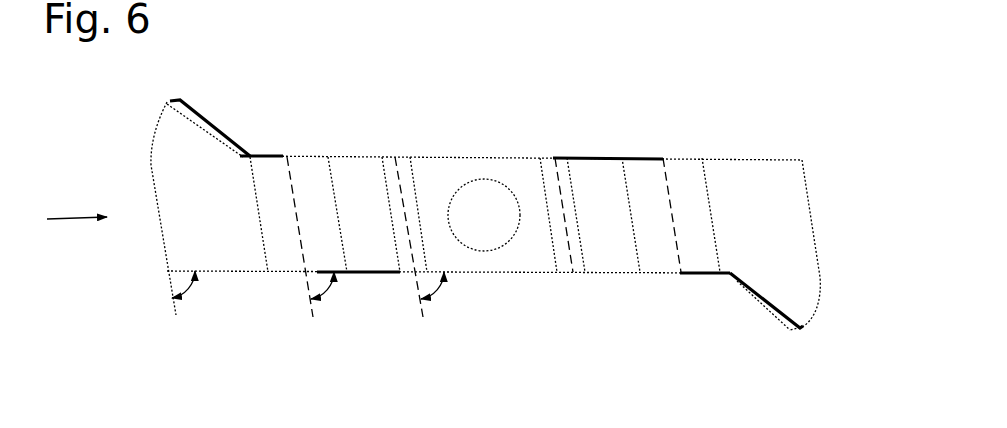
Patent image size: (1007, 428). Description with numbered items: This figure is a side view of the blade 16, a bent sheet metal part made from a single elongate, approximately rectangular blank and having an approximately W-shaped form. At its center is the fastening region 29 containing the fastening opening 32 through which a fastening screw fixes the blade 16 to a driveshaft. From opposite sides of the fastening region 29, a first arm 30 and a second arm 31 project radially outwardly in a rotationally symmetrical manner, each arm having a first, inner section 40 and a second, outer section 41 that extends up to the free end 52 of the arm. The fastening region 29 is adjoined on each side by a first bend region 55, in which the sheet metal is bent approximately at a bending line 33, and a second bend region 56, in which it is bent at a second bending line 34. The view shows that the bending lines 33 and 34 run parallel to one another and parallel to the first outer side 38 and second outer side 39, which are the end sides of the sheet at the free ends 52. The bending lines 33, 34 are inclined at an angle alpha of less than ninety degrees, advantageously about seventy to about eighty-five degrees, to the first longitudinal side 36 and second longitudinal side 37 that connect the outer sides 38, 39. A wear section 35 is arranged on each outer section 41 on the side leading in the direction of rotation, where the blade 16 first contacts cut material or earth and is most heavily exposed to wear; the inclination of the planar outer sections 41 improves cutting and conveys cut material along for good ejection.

The blade 16 is at (455, 183).
The fastening region 29 is at (460, 168).
The first arm 30 is at (262, 120).
The second arm 31 is at (622, 125).
The fastening opening 32 is at (498, 178).
The bending line 33 is at (412, 257).
The second bending line 34 is at (302, 247).
The wear section 35 is at (152, 118).
The first longitudinal side 36 is at (683, 157).
The second longitudinal side 37 is at (527, 275).
The first outer side 38 is at (163, 242).
The second outer side 39 is at (810, 212).
The first inner section 40 is at (350, 173).
The second outer section 41 is at (230, 250).
The free end 52 is at (777, 0).
The first bend region 55 is at (402, 145).
The second bend region 56 is at (308, 145).